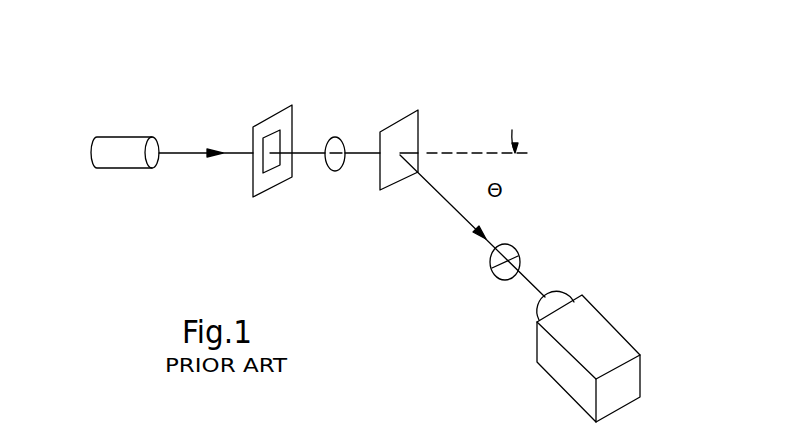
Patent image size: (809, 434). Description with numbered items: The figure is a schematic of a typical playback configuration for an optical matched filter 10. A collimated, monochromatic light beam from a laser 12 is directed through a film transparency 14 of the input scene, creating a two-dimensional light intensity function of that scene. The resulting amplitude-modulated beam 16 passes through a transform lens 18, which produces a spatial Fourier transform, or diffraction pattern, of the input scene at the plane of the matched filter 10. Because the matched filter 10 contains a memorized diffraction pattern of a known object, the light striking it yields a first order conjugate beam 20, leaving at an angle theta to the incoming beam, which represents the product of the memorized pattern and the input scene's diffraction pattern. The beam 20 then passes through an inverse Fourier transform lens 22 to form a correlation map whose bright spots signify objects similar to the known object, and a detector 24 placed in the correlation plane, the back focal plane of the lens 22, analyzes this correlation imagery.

The optical matched filter 10 is at (420, 117).
The laser 12 is at (107, 137).
The film transparency 14 is at (250, 177).
The amplitude-modulated beam 16 is at (305, 152).
The transform lens 18 is at (335, 172).
The first order conjugate beam 20 is at (443, 197).
The inverse Fourier transform lens 22 is at (520, 257).
The detector 24 is at (537, 353).